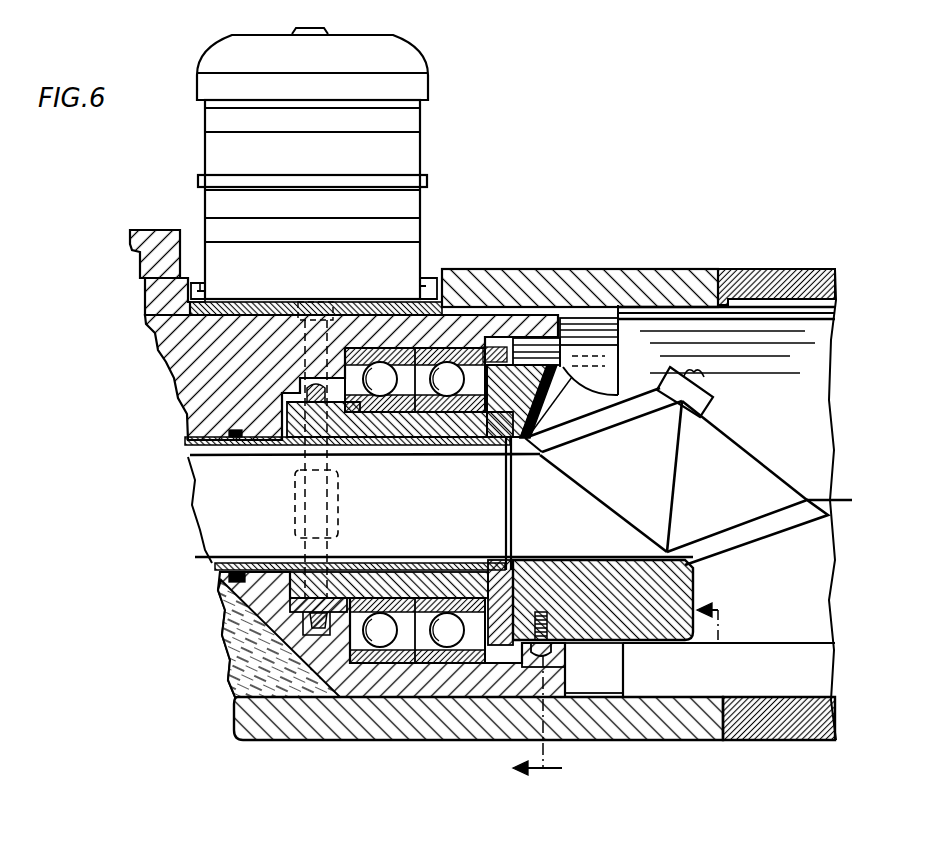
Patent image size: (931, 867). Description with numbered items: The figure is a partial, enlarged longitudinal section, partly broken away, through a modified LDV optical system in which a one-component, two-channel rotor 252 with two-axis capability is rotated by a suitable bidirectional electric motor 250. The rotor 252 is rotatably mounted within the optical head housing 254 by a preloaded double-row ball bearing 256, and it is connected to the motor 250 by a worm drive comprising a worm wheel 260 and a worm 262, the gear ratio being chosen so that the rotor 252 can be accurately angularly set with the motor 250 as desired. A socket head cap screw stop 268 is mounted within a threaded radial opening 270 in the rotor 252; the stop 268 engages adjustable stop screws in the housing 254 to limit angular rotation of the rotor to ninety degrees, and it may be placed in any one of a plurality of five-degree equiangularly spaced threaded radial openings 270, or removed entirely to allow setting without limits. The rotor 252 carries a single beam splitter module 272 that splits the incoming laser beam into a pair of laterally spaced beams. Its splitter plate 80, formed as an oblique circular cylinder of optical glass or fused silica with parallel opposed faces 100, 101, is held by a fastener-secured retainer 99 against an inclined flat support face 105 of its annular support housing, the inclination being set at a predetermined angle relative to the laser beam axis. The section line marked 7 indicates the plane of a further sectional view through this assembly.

The bidirectional electric motor 250 is at (338, 164).
The two-axis rotor 252 is at (650, 643).
The optical head housing 254 is at (566, 270).
The preloaded double-row ball bearing 256 is at (448, 348).
The worm wheel 260 is at (318, 628).
The worm 262 is at (340, 502).
The socket head cap screw stop 268 is at (553, 650).
The threaded radial opening 270 is at (543, 612).
The beam splitter module 272 is at (699, 576).
The splitter plate 80 is at (720, 433).
The retainer 99 is at (706, 381).
The face of splitter plate 100 is at (761, 462).
The face of splitter plate 101 is at (600, 503).
The inclined flat support face 105 is at (575, 472).
The section line 7- 7 is at (629, 691).